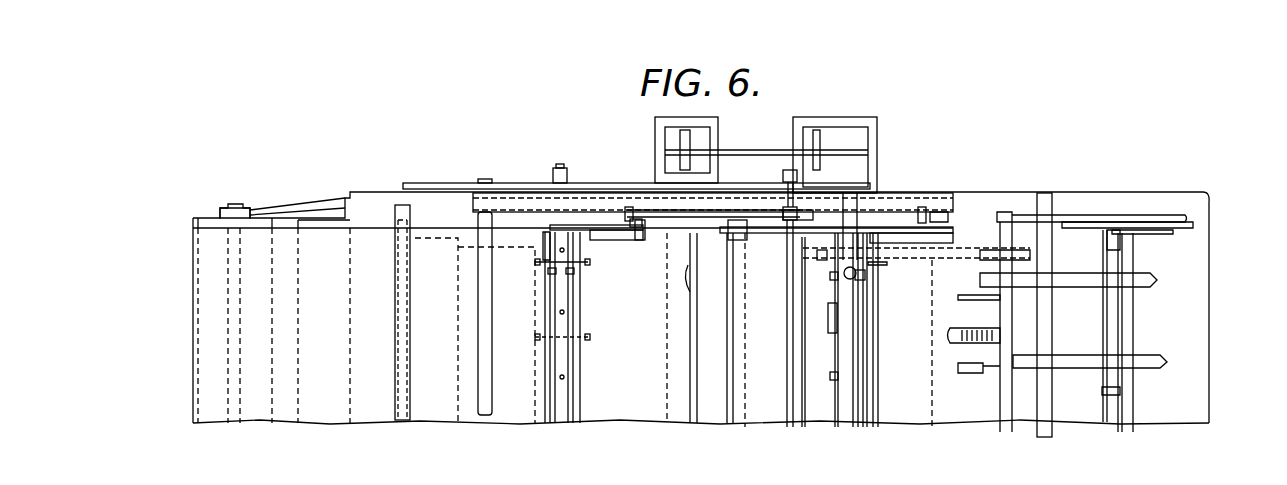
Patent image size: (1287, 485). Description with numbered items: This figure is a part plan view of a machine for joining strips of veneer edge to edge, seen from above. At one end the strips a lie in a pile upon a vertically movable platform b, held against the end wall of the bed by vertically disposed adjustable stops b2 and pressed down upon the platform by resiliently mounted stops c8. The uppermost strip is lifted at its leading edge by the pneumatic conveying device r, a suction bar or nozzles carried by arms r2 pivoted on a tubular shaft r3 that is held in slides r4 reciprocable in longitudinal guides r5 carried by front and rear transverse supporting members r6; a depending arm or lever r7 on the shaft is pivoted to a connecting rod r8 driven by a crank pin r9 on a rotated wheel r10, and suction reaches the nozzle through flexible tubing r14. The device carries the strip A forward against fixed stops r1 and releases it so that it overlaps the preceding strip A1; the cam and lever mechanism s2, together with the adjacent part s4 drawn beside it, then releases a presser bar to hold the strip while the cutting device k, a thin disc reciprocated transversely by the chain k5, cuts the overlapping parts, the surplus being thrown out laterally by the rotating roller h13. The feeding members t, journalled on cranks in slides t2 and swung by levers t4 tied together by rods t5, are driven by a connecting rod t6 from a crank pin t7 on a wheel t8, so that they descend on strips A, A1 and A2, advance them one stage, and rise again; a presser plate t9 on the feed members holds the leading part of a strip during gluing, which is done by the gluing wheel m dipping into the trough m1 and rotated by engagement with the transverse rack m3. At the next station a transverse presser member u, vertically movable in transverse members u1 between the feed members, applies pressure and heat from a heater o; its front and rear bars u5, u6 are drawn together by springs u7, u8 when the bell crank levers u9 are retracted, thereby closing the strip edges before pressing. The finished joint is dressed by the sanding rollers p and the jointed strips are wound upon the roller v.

The strip A is at (701, 310).
The preceding strip A1 is at (760, 330).
The preceding strip A2 is at (645, 328).
The roller v is at (222, 222).
The sanding rollers p is at (400, 345).
The heater o is at (537, 247).
The feeding members t is at (713, 166).
The slides t2 is at (627, 210).
The lever t4 is at (635, 235).
The rods t5 is at (890, 213).
The connecting rod t6 is at (645, 220).
The crank pin t7 is at (560, 166).
The wheel t8 is at (520, 183).
The presser plate t9 is at (720, 308).
The gluing wheel m is at (692, 297).
The trough m1 is at (728, 190).
The transverse rack or bar m3 is at (668, 395).
The cutting device k is at (842, 287).
The chain k5 is at (818, 185).
The rotating roller h13 is at (828, 333).
The presser member u is at (553, 350).
The transverse members u1 is at (560, 373).
The bar u5 is at (545, 400).
The bar u6 is at (580, 366).
The spring u7 is at (540, 264).
The spring u8 is at (582, 262).
The bell crank levers u9 is at (570, 273).
The cam and lever mechanism s2 is at (870, 267).
The bracket s4 is at (877, 265).
The pneumatic conveying device r is at (1000, 313).
The fixed stops r1 is at (838, 267).
The arms r2 is at (958, 298).
The tubular shaft r3 is at (992, 367).
The slides r4 is at (1027, 257).
The longitudinal guides r5 is at (1047, 197).
The transverse supporting members r6 is at (848, 338).
The arm or lever r7 is at (1002, 215).
The connecting rod r8 is at (1103, 215).
The crank pin r9 is at (1183, 217).
The wheel r10 is at (1193, 224).
The flexible tubing r14 is at (963, 338).
The strips a is at (1076, 324).
The platform b is at (1113, 415).
The adjustable stops b2 is at (1118, 253).
The stops c8 is at (1027, 280).